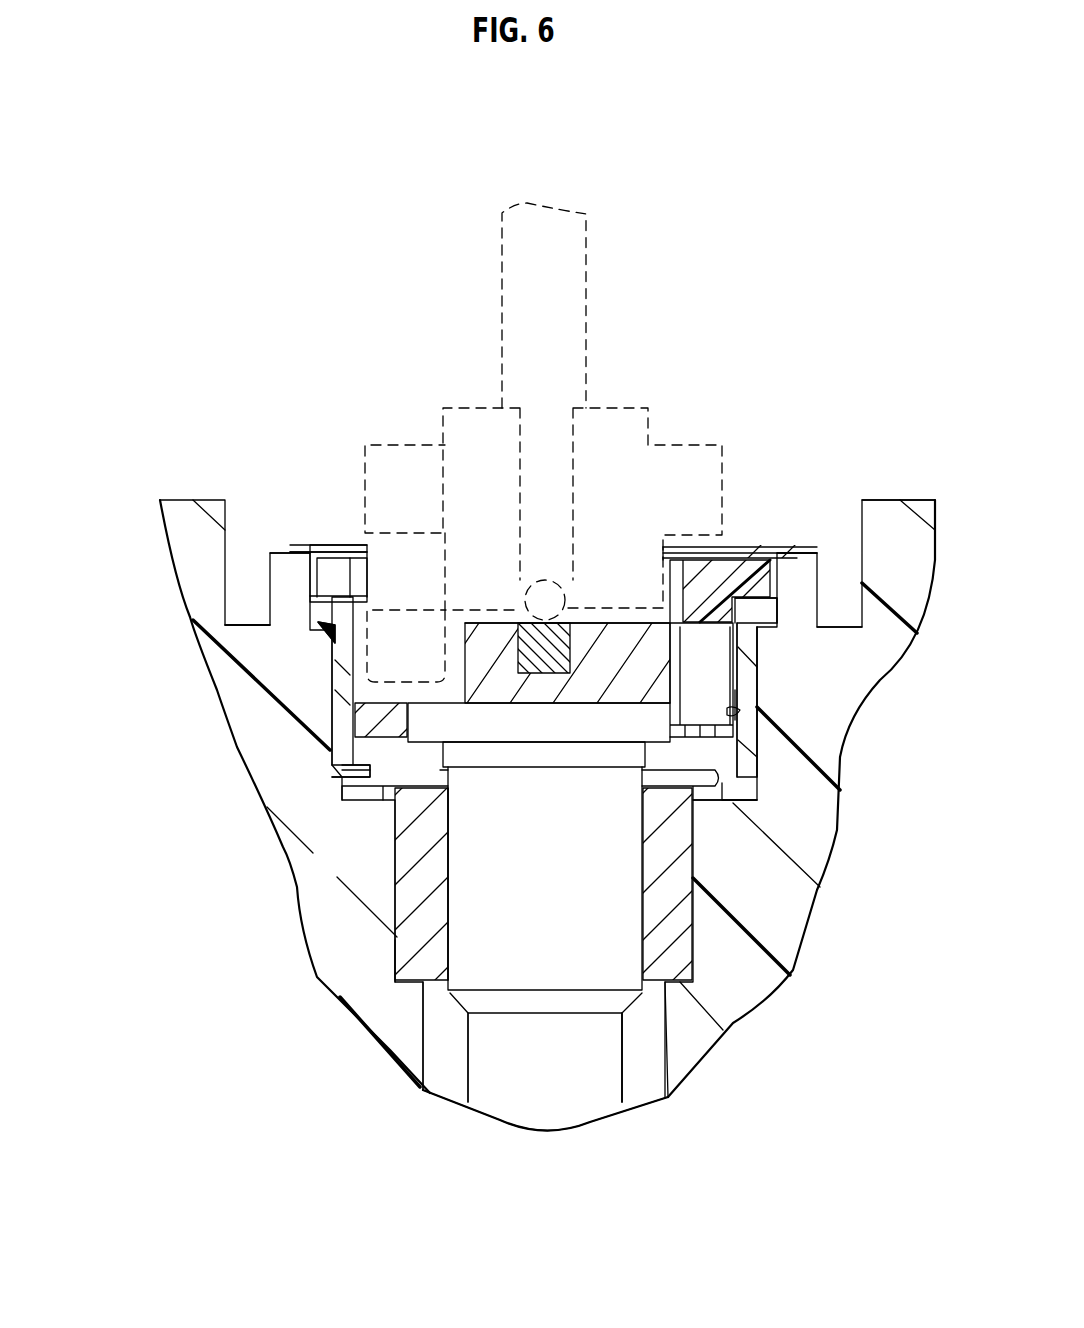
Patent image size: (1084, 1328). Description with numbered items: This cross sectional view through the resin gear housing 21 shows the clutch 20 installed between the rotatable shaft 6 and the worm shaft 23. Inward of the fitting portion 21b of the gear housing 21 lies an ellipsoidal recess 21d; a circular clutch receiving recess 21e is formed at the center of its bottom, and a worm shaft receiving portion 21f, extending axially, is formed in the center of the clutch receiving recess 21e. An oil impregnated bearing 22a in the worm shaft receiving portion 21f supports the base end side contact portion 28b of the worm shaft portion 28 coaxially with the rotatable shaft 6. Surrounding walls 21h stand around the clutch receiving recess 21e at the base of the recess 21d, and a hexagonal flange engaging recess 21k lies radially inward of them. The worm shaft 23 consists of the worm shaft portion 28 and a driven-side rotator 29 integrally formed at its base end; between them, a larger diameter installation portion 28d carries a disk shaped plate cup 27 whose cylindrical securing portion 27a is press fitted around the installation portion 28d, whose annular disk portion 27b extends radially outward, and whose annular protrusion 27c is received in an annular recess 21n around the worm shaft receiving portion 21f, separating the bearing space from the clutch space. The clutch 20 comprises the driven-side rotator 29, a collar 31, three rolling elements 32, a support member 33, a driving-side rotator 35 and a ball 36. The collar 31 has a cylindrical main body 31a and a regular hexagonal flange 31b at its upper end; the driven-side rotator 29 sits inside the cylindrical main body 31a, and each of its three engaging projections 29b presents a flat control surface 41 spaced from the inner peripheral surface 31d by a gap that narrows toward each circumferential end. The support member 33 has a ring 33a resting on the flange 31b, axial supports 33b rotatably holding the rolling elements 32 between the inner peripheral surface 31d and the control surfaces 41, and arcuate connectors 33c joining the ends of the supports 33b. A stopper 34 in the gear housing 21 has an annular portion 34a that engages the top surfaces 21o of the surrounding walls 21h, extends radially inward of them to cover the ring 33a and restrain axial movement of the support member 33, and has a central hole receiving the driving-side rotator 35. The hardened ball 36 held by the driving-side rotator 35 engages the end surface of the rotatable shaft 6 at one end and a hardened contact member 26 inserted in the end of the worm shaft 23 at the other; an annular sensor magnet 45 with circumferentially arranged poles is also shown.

The rotatable shaft 6 is at (530, 205).
The clutch 20 is at (737, 385).
The gear housing 21 is at (800, 923).
The fitting portion 21b is at (888, 500).
The recess 21d is at (247, 625).
The clutch receiving recess 21e is at (330, 717).
The worm shaft receiving portion 21f is at (438, 1040).
The surrounding walls 21h is at (270, 558).
The flange engaging recess 21k is at (323, 623).
The annular recess 21n is at (715, 800).
The top surfaces 21o is at (285, 553).
The oil impregnated bearing 22a is at (397, 945).
The worm shaft 23 is at (623, 1045).
The contact member 26 is at (538, 670).
The plate cup 27 is at (745, 783).
The securing portion 27a is at (470, 775).
The disk portion 27b is at (390, 805).
The annular protrusion 27c is at (340, 790).
The worm shaft portion 28 is at (557, 1117).
The base end side contact portion 28b is at (545, 985).
The installation portion 28d is at (520, 755).
The driven-side rotator 29 is at (590, 728).
The engaging projections 29b is at (640, 630).
The collar 31 is at (554, 667).
The cylindrical main body 31a is at (750, 673).
The flange 31b is at (773, 607).
The inner peripheral surface 31d is at (722, 700).
The rolling elements 32 is at (740, 700).
The support member 33 is at (775, 577).
The ring 33a is at (763, 547).
The supports 33b is at (697, 547).
The connectors 33c is at (350, 703).
The stopper 34 is at (303, 545).
The annular portion 34a is at (330, 545).
The driving-side rotator 35 is at (647, 412).
The ball 36 is at (525, 598).
The control surface 41 is at (673, 670).
The sensor magnet 45 is at (372, 443).